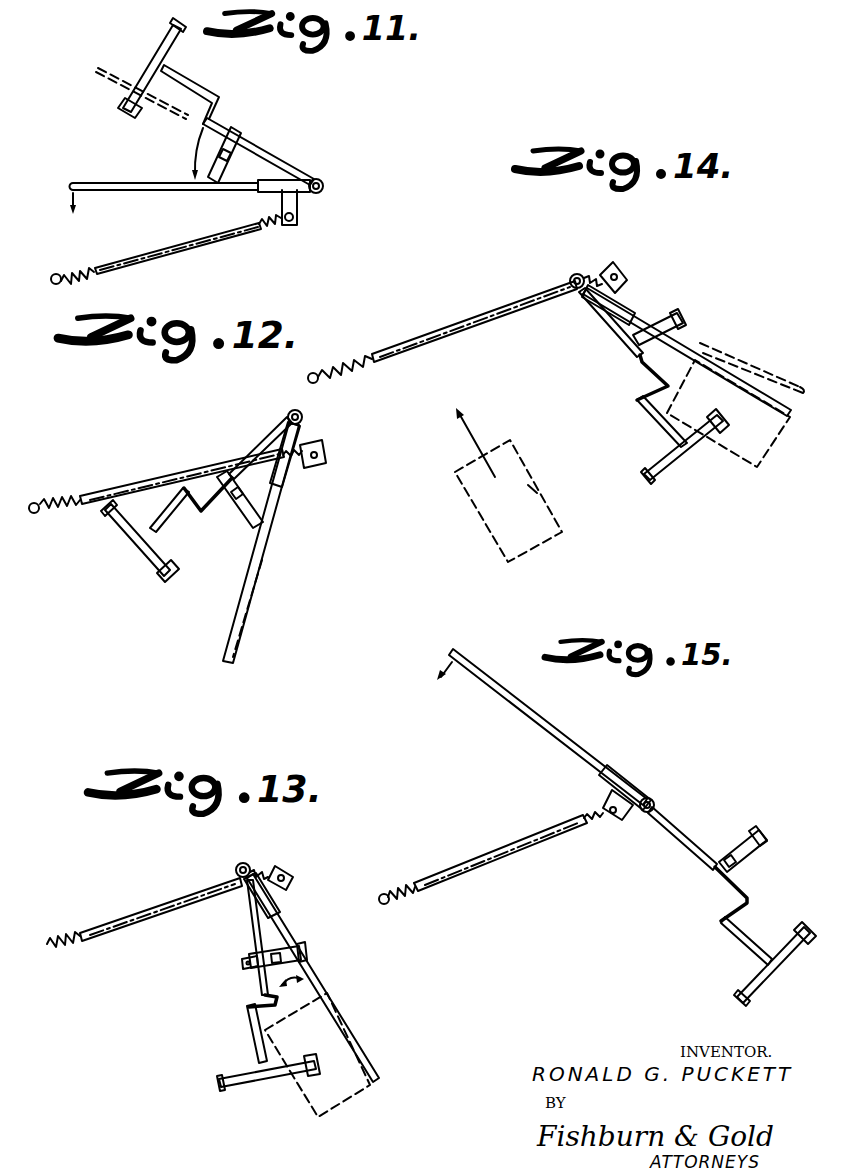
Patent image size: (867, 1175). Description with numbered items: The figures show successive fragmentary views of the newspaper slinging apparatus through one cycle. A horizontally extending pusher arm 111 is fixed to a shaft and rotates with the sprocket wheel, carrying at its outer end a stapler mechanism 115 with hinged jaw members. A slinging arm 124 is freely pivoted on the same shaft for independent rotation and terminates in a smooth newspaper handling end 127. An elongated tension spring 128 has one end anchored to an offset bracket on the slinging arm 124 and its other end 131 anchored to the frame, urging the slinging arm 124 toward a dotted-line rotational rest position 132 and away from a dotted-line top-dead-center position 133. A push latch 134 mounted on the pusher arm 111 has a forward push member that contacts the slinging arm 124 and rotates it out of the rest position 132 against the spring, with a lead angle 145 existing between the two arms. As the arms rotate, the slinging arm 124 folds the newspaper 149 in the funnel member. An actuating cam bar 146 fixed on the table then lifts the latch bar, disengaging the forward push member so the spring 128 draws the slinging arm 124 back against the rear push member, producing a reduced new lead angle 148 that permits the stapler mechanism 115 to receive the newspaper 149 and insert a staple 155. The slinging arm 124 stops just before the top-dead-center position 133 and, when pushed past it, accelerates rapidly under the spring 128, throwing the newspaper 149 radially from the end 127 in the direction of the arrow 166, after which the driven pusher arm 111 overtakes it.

In FIG. 11, the pusher arm 111 is at (212, 120).
In FIG. 12, the pusher arm 111 is at (213, 508).
In FIG. 13, the pusher arm 111 is at (262, 987).
In FIG. 11, the stapler mechanism 115 is at (163, 53).
In FIG. 12, the stapler mechanism 115 is at (143, 543).
In FIG. 13, the stapler mechanism 115 is at (253, 1073).
In FIG. 11, the slinging arm 124 is at (150, 192).
In FIG. 12, the slinging arm 124 is at (266, 534).
In FIG. 14, the slinging arm 124 is at (643, 317).
In FIG. 13, the slinging arm 124 is at (287, 931).
In FIG. 15, the slinging arm 124 is at (552, 728).
In FIG. 15, the newspaper handling end 127 is at (467, 651).
In FIG. 11, the tension spring 128 is at (177, 252).
In FIG. 12, the tension spring 128 is at (178, 470).
In FIG. 14, the tension spring 128 is at (502, 303).
In FIG. 13, the tension spring 128 is at (132, 910).
In FIG. 15, the tension spring 128 is at (467, 860).
In FIG. 11, the other end of tension spring 131 is at (54, 284).
In FIG. 14, the other end of tension spring 131 is at (342, 350).
In FIG. 11, the rotational rest position 132 is at (97, 69).
In FIG. 14, the top-dead-center position 133 is at (767, 374).
In FIG. 13, the push latch 134 is at (295, 954).
In FIG. 11, the lead angle 145 is at (197, 165).
In FIG. 13, the actuating cam bar 146 is at (247, 953).
In FIG. 13, the new lead angle 148 is at (298, 988).
In FIG. 12, the newspaper 149 is at (260, 583).
In FIG. 14, the newspaper 149 is at (763, 438).
In FIG. 13, the newspaper 149 is at (343, 1103).
In FIG. 14, the staple 155 is at (537, 483).
In FIG. 14, the direction of throw 166 is at (483, 432).